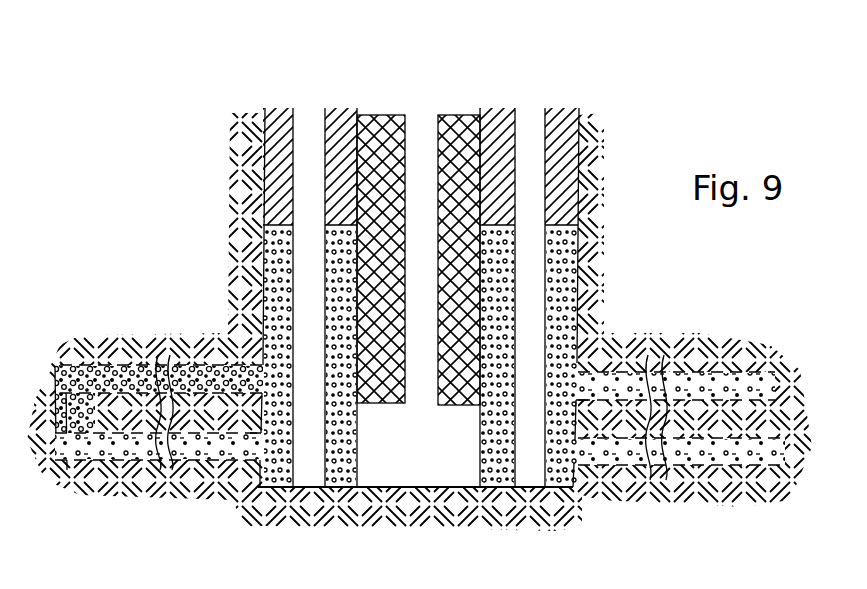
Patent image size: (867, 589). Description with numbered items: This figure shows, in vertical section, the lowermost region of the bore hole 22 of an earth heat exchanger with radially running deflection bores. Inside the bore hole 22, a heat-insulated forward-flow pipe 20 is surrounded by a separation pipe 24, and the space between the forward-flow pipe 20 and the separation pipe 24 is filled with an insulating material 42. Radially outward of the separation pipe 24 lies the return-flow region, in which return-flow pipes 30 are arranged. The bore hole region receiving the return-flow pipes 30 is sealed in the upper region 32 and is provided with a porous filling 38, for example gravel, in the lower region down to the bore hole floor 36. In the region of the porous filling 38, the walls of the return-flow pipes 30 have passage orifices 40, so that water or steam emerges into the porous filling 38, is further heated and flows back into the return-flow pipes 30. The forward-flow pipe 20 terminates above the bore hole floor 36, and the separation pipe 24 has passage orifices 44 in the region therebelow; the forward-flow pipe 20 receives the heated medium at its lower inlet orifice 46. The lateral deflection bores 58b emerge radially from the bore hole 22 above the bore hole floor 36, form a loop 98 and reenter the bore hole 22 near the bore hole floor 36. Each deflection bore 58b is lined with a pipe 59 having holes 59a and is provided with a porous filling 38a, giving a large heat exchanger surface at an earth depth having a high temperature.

The forward-flow pipe 20 is at (423, 120).
The bore hole 22 is at (265, 163).
The separation pipe 24 is at (357, 108).
The return-flow pipe 30 is at (308, 115).
The upper region 32 is at (580, 141).
The bore hole floor 36 is at (403, 490).
The porous filling 38 is at (557, 255).
The porous filling 38a is at (693, 387).
The passage orifice 40 is at (562, 300).
The insulating material 42 is at (467, 128).
The passage orifice 44 is at (355, 458).
The lower inlet orifice 46 is at (418, 405).
The lateral deflection bore 58b is at (212, 352).
The pipe 59 is at (139, 462).
The hole 59a is at (215, 465).
The loop 98 is at (93, 315).